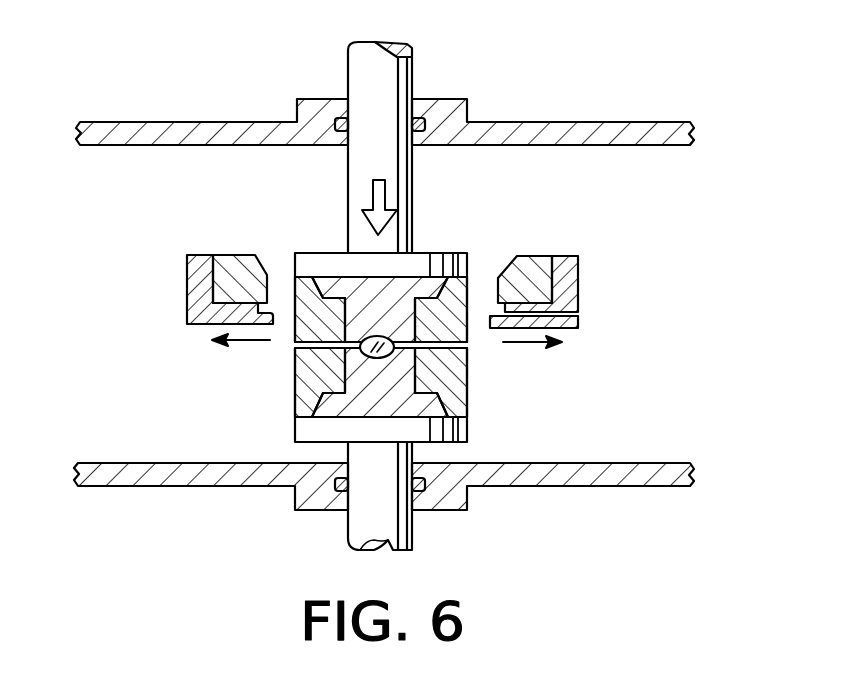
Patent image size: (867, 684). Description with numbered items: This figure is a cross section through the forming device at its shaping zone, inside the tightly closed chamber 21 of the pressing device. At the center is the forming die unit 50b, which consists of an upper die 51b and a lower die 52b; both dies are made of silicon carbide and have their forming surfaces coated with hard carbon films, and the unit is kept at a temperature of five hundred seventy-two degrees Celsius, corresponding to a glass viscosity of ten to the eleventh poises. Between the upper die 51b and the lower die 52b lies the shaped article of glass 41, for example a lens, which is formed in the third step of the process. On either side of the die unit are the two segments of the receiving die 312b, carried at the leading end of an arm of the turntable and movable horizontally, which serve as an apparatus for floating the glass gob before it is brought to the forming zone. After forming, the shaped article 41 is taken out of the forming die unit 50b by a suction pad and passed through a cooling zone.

The chamber 21 is at (580, 138).
The shaped article of glass 41 is at (415, 372).
The upper die 51b is at (345, 290).
The lower die 52b is at (393, 383).
The forming die unit 50b is at (347, 352).
The receiving die 312b is at (198, 292).